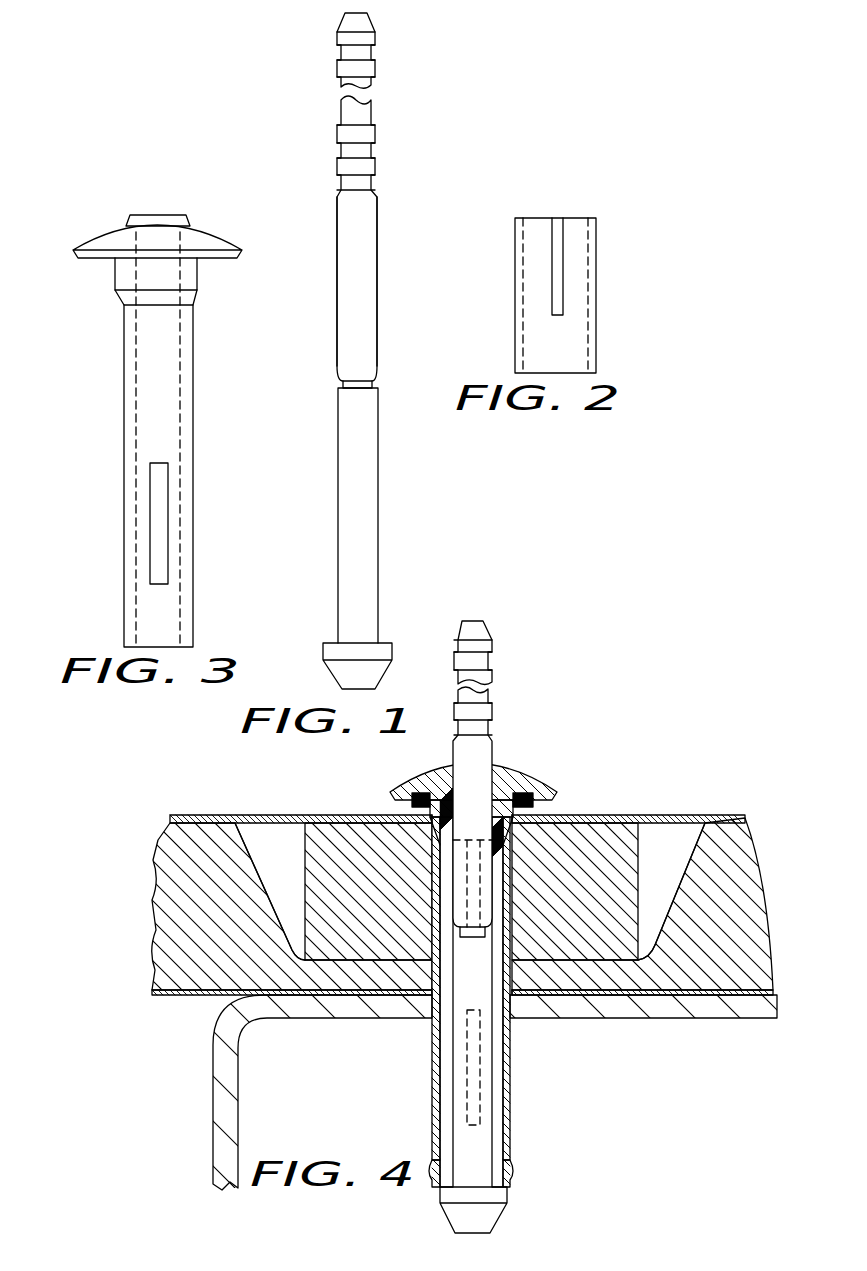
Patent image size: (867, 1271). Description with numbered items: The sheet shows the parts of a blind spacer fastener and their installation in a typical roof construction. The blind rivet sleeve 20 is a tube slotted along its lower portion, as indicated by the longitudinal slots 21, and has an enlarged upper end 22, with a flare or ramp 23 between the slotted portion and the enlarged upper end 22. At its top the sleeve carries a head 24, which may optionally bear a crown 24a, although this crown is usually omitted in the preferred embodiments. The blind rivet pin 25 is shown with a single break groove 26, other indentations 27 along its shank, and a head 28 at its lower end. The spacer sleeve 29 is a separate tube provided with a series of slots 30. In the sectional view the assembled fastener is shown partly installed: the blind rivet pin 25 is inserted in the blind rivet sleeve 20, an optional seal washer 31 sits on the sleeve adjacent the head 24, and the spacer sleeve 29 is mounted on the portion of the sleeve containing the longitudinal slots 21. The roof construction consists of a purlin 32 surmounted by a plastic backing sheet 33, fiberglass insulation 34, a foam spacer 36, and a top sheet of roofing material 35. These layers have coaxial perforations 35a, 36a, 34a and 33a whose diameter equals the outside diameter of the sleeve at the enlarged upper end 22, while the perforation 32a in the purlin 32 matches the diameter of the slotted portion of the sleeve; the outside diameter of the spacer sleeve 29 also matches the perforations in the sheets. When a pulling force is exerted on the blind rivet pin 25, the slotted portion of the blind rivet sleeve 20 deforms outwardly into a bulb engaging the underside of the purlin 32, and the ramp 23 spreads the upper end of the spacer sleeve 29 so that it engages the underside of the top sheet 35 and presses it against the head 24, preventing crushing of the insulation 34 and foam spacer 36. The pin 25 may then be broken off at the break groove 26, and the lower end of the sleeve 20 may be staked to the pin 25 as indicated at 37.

In FIG. 3, the blind rivet sleeve 20 is at (193, 389).
In FIG. 4, the blind rivet sleeve 20 is at (510, 1128).
In FIG. 3, the longitudinal slots 21 is at (160, 516).
In FIG. 4, the longitudinal slots 21 is at (470, 1085).
In FIG. 3, the enlarged upper end 22 is at (197, 277).
In FIG. 4, the enlarged upper end 22 is at (425, 810).
In FIG. 3, the flare or ramp 23 is at (197, 293).
In FIG. 4, the flare or ramp 23 is at (435, 848).
In FIG. 3, the head 24 is at (110, 238).
In FIG. 4, the head 24 is at (510, 786).
In FIG. 3, the crown 24a is at (185, 221).
In FIG. 1, the blind rivet pin 25 is at (377, 236).
In FIG. 4, the blind rivet pin 25 is at (493, 742).
In FIG. 1, the break groove 26 is at (377, 382).
In FIG. 4, the break groove 26 is at (455, 932).
In FIG. 1, the indentations 27 is at (375, 48).
In FIG. 4, the indentations 27 is at (490, 692).
In FIG. 1, the head 28 is at (392, 647).
In FIG. 4, the head 28 is at (510, 1197).
In FIG. 2, the spacer sleeve 29 is at (596, 290).
In FIG. 4, the spacer sleeve 29 is at (512, 998).
In FIG. 2, the slots 30 is at (560, 238).
In FIG. 4, the slots 30 is at (480, 858).
In FIG. 4, the seal washer 31 is at (535, 800).
In FIG. 4, the purlin 32 is at (640, 1018).
In FIG. 4, the perforation in purlin 32a is at (505, 1030).
In FIG. 4, the plastic backing sheet 33 is at (718, 995).
In FIG. 4, the perforation in backing sheet 33a is at (445, 997).
In FIG. 4, the fiberglass insulation 34 is at (742, 850).
In FIG. 4, the perforation in insulation 34a is at (440, 825).
In FIG. 4, the top sheet of roofing material 35 is at (712, 840).
In FIG. 4, the perforation in top sheet 35a is at (432, 842).
In FIG. 4, the foam spacer 36 is at (660, 845).
In FIG. 4, the perforation in foam spacer 36a is at (430, 880).
In FIG. 4, the staking 37 is at (513, 1170).